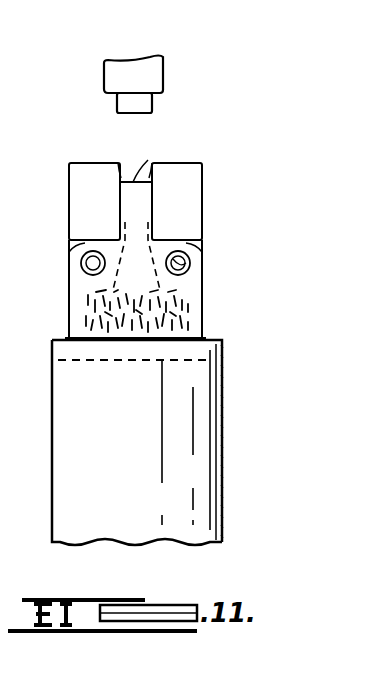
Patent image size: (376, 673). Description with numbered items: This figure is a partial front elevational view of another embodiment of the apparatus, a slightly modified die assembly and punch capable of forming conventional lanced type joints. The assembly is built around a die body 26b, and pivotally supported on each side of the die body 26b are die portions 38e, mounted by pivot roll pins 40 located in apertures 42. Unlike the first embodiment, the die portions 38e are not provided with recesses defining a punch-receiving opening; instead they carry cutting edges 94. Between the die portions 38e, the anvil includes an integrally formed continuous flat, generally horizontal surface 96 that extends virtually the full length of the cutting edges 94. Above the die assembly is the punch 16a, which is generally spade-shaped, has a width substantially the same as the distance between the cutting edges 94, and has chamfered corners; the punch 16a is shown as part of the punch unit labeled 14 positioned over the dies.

The bit 14 is at (117, 67).
The punch 16a is at (122, 102).
The flat horizontal surface 96 is at (133, 182).
The cutting edges 94 is at (118, 163).
The die portions 38e is at (78, 200).
The pivot roll pins 40 is at (81, 267).
The apertures 42 is at (184, 258).
The die body 26b is at (202, 402).